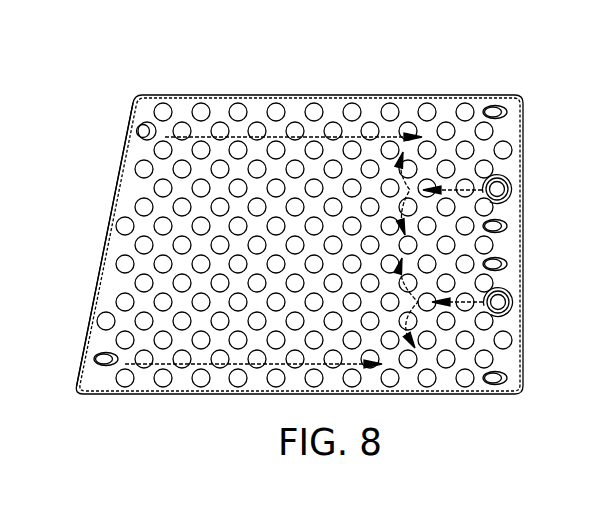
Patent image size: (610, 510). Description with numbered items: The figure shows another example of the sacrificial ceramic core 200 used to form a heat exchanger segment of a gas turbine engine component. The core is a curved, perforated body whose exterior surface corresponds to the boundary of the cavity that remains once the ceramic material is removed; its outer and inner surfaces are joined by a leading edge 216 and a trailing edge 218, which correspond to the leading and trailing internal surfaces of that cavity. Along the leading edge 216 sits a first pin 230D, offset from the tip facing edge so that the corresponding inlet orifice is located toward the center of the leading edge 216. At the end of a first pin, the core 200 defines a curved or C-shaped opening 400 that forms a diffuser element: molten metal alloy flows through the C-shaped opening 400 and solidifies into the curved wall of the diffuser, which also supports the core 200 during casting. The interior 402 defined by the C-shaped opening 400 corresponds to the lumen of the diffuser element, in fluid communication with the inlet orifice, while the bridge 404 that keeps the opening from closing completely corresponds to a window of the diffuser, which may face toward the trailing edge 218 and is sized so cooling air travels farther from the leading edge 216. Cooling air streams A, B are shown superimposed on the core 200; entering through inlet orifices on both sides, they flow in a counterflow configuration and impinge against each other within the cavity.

The sacrificial ceramic core 200 is at (512, 126).
The trailing edge 218 is at (104, 233).
The leading edge 216 is at (514, 303).
The C-shaped opening 400 is at (518, 145).
The first pin 230D is at (512, 189).
The interior 402 is at (513, 200).
The bridge 404 is at (487, 181).
The cooling air stream A is at (242, 137).
The cooling air stream B is at (464, 185).